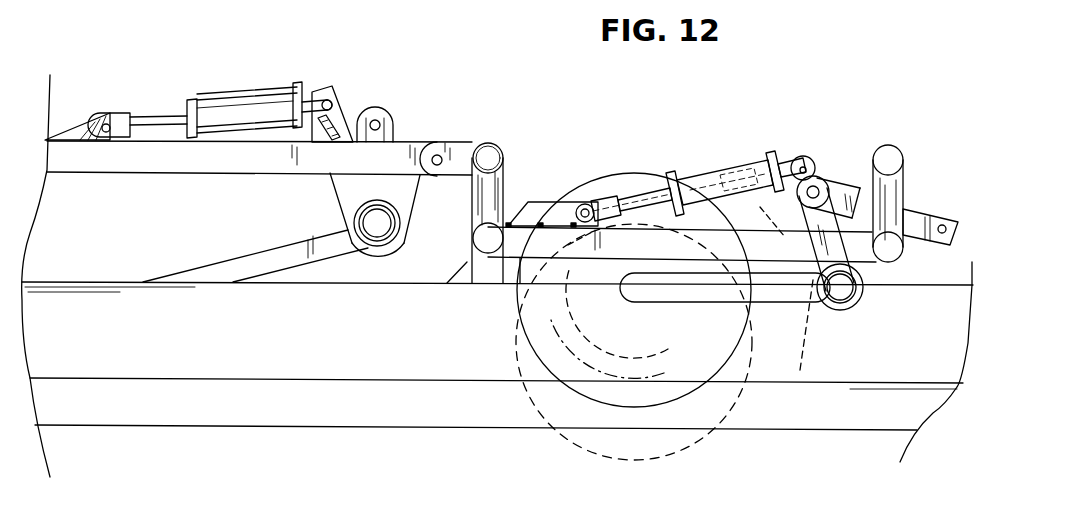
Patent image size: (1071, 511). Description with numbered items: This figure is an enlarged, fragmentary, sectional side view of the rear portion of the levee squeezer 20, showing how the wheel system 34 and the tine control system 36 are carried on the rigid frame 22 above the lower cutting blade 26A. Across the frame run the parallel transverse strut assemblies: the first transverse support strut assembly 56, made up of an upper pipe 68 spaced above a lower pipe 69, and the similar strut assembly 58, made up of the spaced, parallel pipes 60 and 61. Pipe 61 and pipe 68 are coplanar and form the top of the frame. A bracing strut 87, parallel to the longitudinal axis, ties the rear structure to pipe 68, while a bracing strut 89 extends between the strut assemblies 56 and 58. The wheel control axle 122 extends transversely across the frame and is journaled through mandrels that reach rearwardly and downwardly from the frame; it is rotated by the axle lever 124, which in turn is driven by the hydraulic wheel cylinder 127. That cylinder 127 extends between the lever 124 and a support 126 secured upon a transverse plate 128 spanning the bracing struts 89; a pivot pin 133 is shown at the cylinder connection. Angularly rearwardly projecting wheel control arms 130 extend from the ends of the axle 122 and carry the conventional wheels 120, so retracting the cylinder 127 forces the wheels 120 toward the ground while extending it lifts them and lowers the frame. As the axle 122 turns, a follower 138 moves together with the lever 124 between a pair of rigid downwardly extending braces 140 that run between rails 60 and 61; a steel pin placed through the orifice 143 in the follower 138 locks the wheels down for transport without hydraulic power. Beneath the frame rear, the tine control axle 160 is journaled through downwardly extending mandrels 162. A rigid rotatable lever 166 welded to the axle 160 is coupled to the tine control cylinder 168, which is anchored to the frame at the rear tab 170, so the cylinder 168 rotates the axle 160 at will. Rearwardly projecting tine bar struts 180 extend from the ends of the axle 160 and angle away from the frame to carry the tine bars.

The levee squeezer 20 is at (461, 118).
The frame 22 is at (533, 139).
The cutting blade 26A is at (390, 405).
The wheel system 34 is at (648, 139).
The tine control system 36 is at (199, 95).
The first transverse support strut assembly 56 is at (876, 143).
The strut assembly 58 is at (508, 128).
The pipe 60 is at (890, 249).
The pipe 61 is at (888, 160).
The upper pipe 68 is at (483, 160).
The lower pipe 69 is at (486, 243).
The bracing strut 87 is at (282, 160).
The bracing strut 89 is at (680, 246).
The wheel 120 is at (655, 323).
The wheel control axle 122 is at (845, 292).
The axle lever 124 is at (803, 163).
The support 126 is at (580, 212).
The hydraulic wheel cylinder 127 is at (756, 183).
The transverse plate 128 is at (506, 222).
The wheel control arm 130 is at (715, 288).
The pivot pin 133 is at (679, 224).
The follower 138 is at (920, 217).
The brace 140 is at (900, 190).
The orifice 143 is at (940, 231).
The tine control axle 160 is at (383, 223).
The mandrel 162 is at (404, 193).
The rotatable lever 166 is at (340, 113).
The tine control cylinder 168 is at (247, 110).
The rear tab 170 is at (95, 114).
The tine bar strut 180 is at (257, 260).